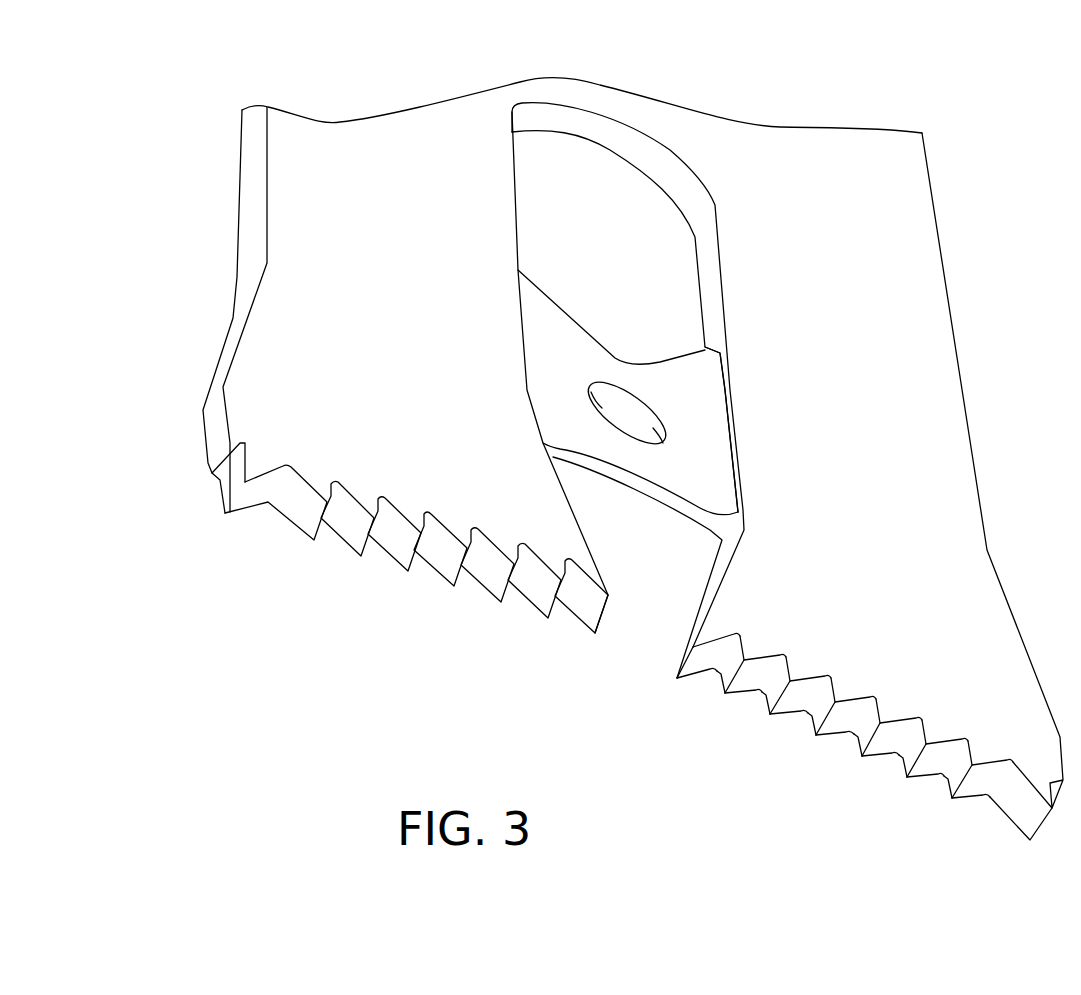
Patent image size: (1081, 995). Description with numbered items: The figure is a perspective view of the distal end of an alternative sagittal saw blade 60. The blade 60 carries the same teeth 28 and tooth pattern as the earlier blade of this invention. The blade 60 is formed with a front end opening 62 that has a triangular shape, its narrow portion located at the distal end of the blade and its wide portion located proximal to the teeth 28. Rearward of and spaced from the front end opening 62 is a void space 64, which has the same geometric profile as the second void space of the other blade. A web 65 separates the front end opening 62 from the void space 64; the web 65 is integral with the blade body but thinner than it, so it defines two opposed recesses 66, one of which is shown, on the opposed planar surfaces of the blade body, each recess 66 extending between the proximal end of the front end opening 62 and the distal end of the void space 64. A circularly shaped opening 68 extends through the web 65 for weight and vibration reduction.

The sagittal saw blade 60 is at (345, 92).
The front end opening 62 is at (628, 638).
The void space 64 is at (680, 262).
The web 65 is at (575, 370).
The recess 66 is at (707, 397).
The circularly shaped opening 68 is at (590, 392).
The teeth 28 is at (225, 513).